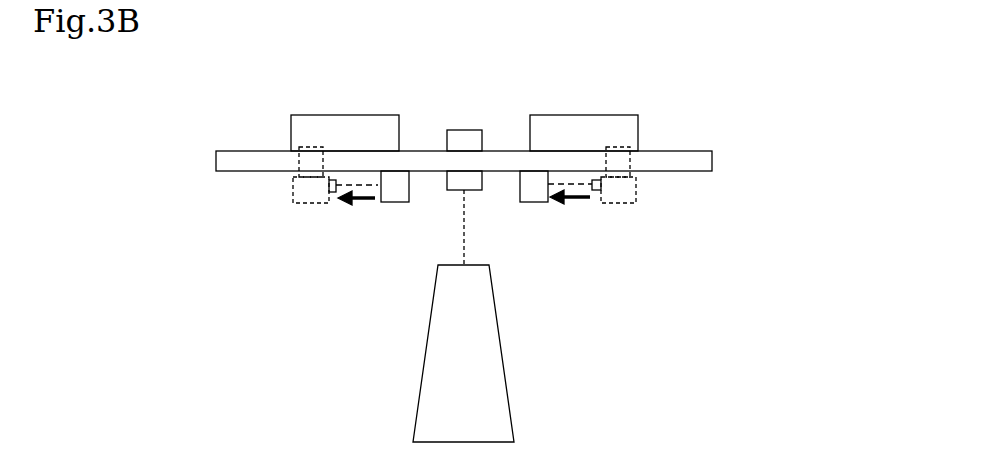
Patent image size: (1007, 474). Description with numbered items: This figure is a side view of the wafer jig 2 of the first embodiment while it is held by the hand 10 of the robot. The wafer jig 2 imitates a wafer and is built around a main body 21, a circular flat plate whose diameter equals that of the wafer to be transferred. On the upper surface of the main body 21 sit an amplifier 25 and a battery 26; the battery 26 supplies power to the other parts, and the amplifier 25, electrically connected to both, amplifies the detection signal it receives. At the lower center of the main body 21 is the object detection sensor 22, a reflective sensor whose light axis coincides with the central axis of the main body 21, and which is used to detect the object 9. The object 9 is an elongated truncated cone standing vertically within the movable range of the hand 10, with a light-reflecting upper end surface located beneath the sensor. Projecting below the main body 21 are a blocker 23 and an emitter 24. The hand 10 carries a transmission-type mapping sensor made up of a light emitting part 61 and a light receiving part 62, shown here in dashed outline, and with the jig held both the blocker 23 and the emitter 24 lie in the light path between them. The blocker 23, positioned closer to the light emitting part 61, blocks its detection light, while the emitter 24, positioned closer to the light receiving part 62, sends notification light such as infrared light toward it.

The wafer jig 2 is at (243, 128).
The object 9 is at (487, 332).
The hand 10 is at (293, 192).
The main body 21 is at (707, 158).
The object detection sensor 22 is at (462, 130).
The blocker 23 is at (535, 195).
The emitter 24 is at (390, 198).
The amplifier 25 is at (592, 127).
The battery 26 is at (342, 127).
The light emitting part 61 is at (598, 192).
The light receiving part 62 is at (333, 193).